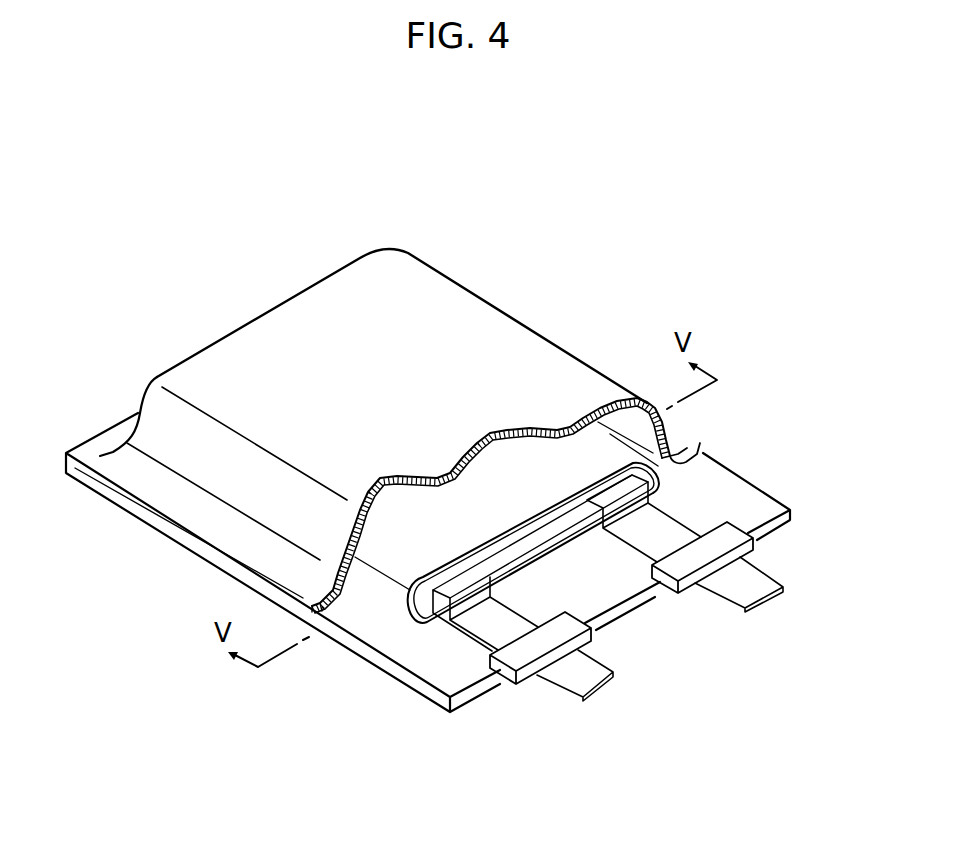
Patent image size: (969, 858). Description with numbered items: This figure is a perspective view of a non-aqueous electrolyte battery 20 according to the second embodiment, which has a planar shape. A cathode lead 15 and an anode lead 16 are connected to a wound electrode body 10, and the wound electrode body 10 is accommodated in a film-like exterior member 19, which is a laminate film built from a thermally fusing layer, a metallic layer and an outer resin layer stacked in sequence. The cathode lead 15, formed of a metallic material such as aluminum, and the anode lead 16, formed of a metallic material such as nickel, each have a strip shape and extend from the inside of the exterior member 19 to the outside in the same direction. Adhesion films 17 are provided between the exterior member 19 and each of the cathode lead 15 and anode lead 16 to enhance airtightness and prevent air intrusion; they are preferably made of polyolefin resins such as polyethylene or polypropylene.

The non-aqueous electrolyte battery 20 is at (530, 101).
The exterior member 19 is at (162, 531).
The wound electrode body 10 is at (568, 475).
The cathode lead 15 is at (603, 693).
The anode lead 16 is at (756, 584).
The adhesion films 17 is at (591, 624).